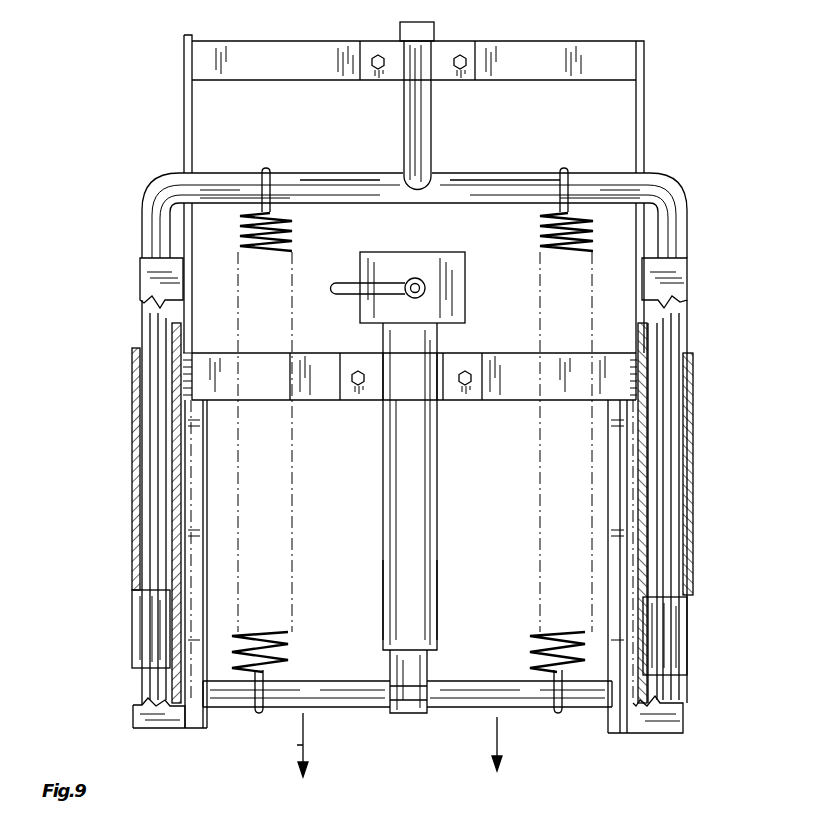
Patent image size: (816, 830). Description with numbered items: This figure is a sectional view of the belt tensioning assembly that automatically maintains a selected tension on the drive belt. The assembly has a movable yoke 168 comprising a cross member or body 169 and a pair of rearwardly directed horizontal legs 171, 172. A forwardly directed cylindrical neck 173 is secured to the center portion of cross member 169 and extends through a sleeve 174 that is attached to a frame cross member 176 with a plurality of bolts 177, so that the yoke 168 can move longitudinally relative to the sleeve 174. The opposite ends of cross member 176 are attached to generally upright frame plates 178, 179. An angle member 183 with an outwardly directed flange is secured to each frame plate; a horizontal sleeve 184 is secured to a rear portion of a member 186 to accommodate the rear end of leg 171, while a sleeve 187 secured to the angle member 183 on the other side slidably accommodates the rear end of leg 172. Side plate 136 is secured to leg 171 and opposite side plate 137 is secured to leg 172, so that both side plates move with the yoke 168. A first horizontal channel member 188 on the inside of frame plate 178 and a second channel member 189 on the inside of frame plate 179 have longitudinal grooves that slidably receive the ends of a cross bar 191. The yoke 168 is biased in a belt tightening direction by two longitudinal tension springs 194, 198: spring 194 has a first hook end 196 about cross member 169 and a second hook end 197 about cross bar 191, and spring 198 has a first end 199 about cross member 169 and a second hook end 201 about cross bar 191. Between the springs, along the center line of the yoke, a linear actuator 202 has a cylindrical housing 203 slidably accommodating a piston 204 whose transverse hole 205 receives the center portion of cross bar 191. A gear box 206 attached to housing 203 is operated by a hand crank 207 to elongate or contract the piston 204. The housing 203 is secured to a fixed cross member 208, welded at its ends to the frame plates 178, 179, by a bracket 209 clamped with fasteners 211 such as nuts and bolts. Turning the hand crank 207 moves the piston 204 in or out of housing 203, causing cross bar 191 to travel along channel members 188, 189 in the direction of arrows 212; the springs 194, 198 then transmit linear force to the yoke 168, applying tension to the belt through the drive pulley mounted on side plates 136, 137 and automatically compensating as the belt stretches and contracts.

The side plate 136 is at (131, 490).
The side plate 137 is at (694, 460).
The yoke 168 is at (690, 206).
The cross member 169 is at (493, 178).
The leg 171 is at (155, 225).
The leg 172 is at (675, 246).
The neck 173 is at (432, 28).
The sleeve 174 is at (410, 50).
The frame cross member 176 is at (292, 56).
The bolts 177 is at (376, 70).
The frame plate 178 is at (184, 112).
The frame plate 179 is at (646, 94).
The angle member 183 is at (670, 725).
The horizontal sleeve 184 is at (145, 629).
The member 186 is at (135, 722).
The sleeve 187 is at (678, 637).
The first horizontal channel member 188 is at (196, 722).
The second horizontal channel member 189 is at (612, 725).
The cross bar 191 is at (328, 700).
The tension spring 194 is at (290, 648).
The first hook end 196 is at (268, 167).
The second hook end 197 is at (257, 713).
The tension spring 198 is at (543, 236).
The first end 199 is at (566, 178).
The second hook end 201 is at (557, 713).
The linear actuator 202 is at (393, 478).
The housing 203 is at (425, 582).
The piston 204 is at (412, 715).
The transverse hole 205 is at (432, 690).
The gear box 206 is at (433, 262).
The hand crank 207 is at (337, 282).
The fixed cross member 208 is at (315, 366).
The bracket 209 is at (431, 366).
The fasteners 211 is at (360, 386).
The arrows 212 is at (308, 746).